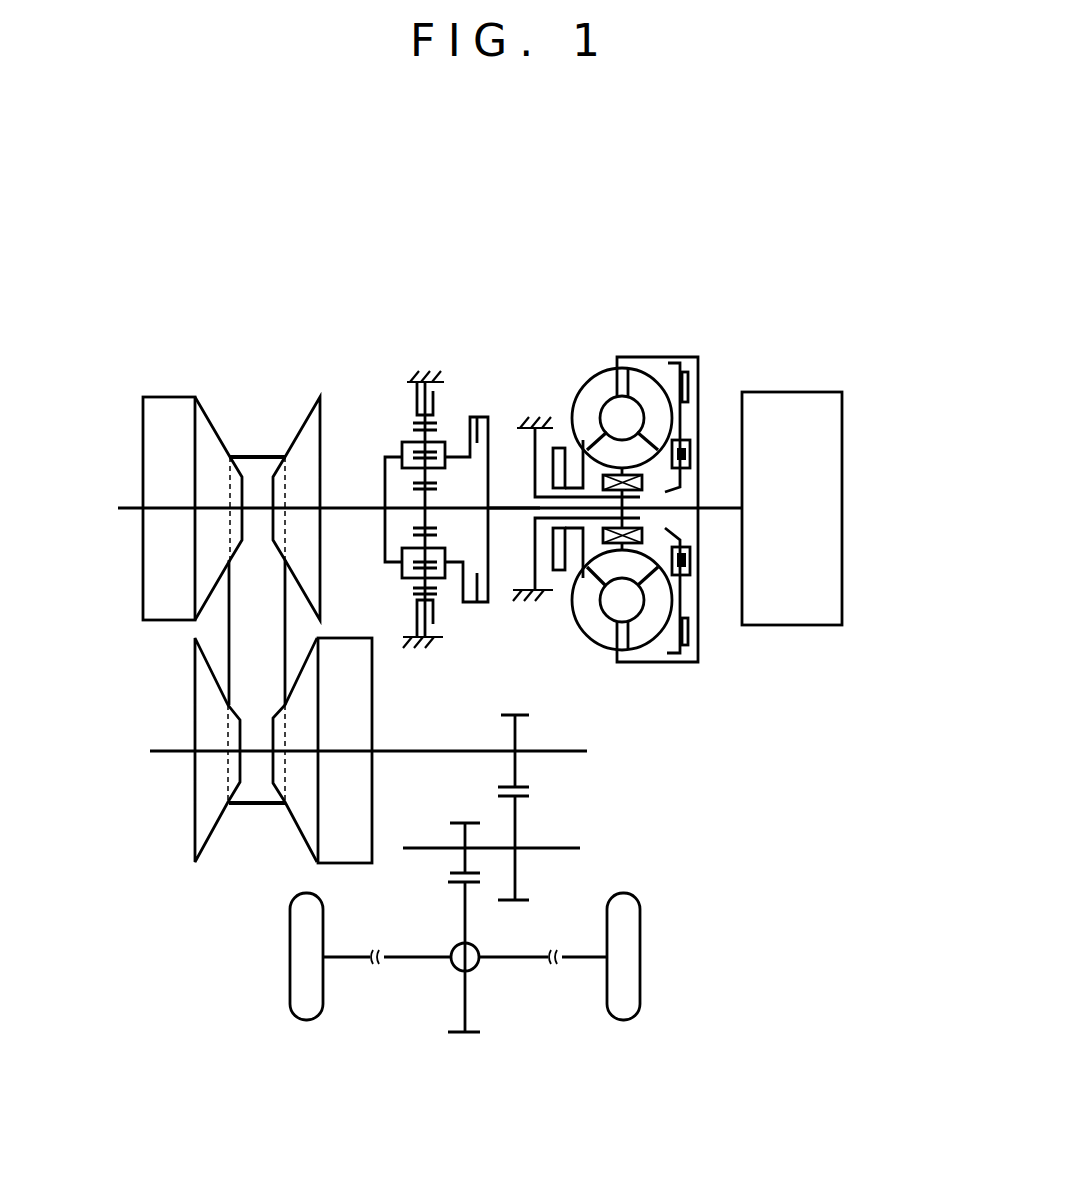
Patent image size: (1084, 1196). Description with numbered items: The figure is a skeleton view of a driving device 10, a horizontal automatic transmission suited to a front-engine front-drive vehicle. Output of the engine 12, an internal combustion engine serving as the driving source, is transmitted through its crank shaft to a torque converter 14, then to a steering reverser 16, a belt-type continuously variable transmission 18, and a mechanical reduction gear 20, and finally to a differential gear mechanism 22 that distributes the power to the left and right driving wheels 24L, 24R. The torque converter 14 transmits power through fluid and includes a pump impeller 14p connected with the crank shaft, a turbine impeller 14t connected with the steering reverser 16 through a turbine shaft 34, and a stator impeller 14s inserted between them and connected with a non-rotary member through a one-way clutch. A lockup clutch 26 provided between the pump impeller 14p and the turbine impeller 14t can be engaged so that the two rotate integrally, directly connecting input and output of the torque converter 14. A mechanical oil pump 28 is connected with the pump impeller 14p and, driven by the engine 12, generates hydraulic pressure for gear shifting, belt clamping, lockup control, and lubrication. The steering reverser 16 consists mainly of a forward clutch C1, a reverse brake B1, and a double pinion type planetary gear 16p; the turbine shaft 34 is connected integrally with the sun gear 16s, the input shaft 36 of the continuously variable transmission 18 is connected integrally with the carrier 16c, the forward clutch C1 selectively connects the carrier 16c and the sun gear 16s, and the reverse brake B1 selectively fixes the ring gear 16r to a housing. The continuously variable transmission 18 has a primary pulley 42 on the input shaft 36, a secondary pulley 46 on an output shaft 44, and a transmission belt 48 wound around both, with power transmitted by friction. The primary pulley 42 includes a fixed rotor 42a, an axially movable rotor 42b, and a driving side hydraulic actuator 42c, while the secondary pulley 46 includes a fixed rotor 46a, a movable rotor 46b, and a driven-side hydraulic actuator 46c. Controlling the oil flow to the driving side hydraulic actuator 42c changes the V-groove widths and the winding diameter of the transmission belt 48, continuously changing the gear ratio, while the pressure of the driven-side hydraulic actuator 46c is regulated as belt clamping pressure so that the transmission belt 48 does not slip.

The driving device 10 is at (629, 268).
The engine 12 is at (845, 438).
The torque converter 14 is at (626, 333).
The pump impeller 14p is at (590, 627).
The turbine impeller 14t is at (638, 633).
The stator impeller 14s is at (612, 568).
The steering reverser 16 is at (456, 330).
The double pinion type planetary gear 16p is at (406, 364).
The sun gear 16s is at (413, 518).
The ring gear 16r is at (415, 610).
The carrier 16c is at (385, 442).
The reverse brake B1 is at (410, 507).
The forward clutch C1 is at (468, 497).
The belt-type continuously variable transmission 18 is at (244, 870).
The mechanical reduction gear 20 is at (595, 807).
The differential gear mechanism 22 is at (460, 960).
The left driving wheel 24L is at (297, 983).
The right driving wheel 24R is at (638, 983).
The lockup clutch 26 is at (688, 382).
The mechanical oil pump 28 is at (560, 455).
The turbine shaft 34 is at (498, 512).
The input shaft 36 is at (345, 505).
The primary pulley 42 is at (166, 634).
The fixed rotor 42a is at (307, 428).
The movable rotor 42b is at (205, 428).
The driving side hydraulic actuator 42c is at (153, 418).
The output shaft 44 is at (440, 755).
The secondary pulley 46 is at (183, 870).
The fixed rotor 46a is at (203, 818).
The movable rotor 46b is at (303, 813).
The driven-side hydraulic actuator 46c is at (363, 728).
The transmission belt 48 is at (260, 453).